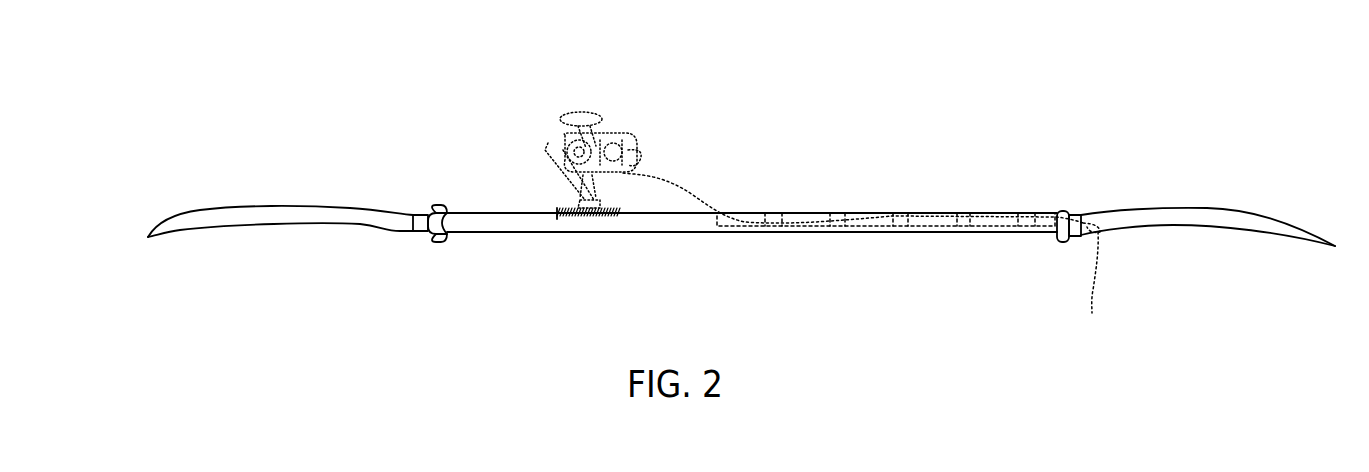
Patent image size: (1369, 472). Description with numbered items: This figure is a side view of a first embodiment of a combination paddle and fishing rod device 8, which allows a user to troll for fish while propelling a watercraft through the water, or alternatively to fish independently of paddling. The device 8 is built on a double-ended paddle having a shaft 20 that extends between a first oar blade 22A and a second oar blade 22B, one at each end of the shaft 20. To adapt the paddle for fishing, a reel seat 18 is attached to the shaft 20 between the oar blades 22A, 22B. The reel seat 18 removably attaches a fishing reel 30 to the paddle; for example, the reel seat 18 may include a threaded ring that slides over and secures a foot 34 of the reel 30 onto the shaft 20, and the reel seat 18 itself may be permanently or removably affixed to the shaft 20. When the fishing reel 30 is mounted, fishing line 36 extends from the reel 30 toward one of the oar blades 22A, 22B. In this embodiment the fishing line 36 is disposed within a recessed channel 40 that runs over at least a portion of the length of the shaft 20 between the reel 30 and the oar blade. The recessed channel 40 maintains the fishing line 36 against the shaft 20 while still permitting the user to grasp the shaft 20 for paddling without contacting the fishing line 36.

The combination paddle and fishing rod device 8 is at (721, 70).
The reel seat 18 is at (557, 213).
The shaft 20 is at (672, 231).
The first oar blade 22A is at (1185, 215).
The second oar blade 22B is at (300, 217).
The fishing reel 30 is at (553, 143).
The foot 34 is at (593, 207).
The fishing line 36 is at (693, 195).
The recessed channel 40 is at (866, 226).